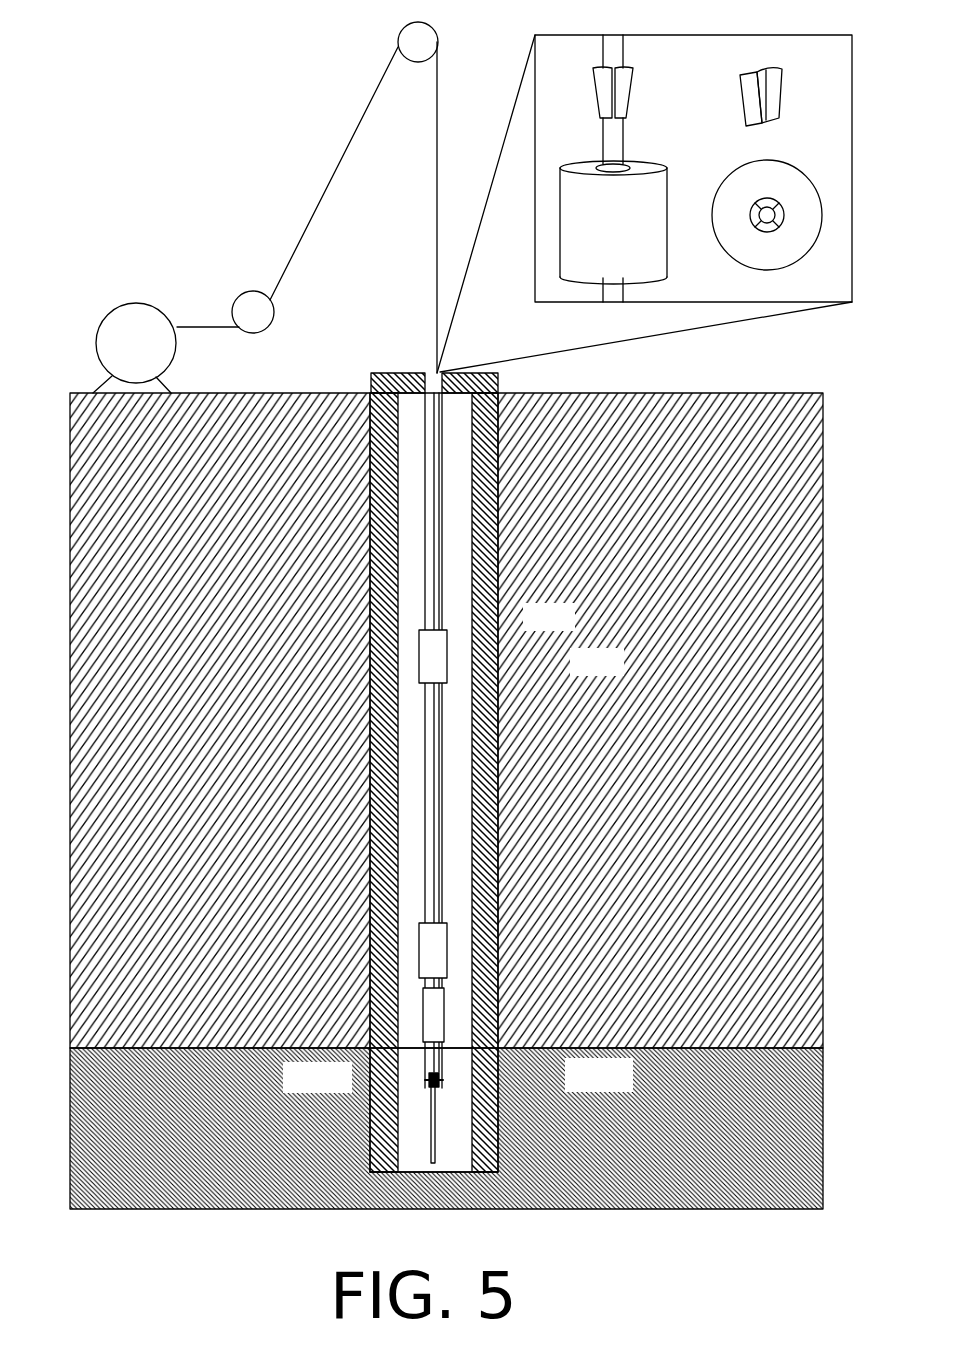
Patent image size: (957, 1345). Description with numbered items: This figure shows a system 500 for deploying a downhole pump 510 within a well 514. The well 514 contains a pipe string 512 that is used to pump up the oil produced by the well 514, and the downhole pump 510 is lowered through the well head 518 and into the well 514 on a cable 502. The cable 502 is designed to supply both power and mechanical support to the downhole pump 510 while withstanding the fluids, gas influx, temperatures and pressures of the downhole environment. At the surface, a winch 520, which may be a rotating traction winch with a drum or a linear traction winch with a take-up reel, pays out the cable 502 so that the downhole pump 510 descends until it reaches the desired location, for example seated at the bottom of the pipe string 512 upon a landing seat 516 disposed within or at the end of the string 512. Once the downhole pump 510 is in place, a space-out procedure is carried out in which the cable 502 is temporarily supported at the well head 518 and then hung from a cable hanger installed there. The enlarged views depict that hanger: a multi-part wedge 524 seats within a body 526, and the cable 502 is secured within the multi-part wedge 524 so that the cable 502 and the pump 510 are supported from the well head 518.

The system 500 is at (200, 152).
The cable 502 is at (436, 252).
The downhole pump 510 is at (435, 1125).
The pipe string 512 is at (447, 652).
The well 514 is at (495, 697).
The landing seat 516 is at (427, 1081).
The well head 518 is at (352, 374).
The winch 520 is at (130, 304).
The multi-part wedge 524 is at (743, 83).
The body 526 is at (640, 162).